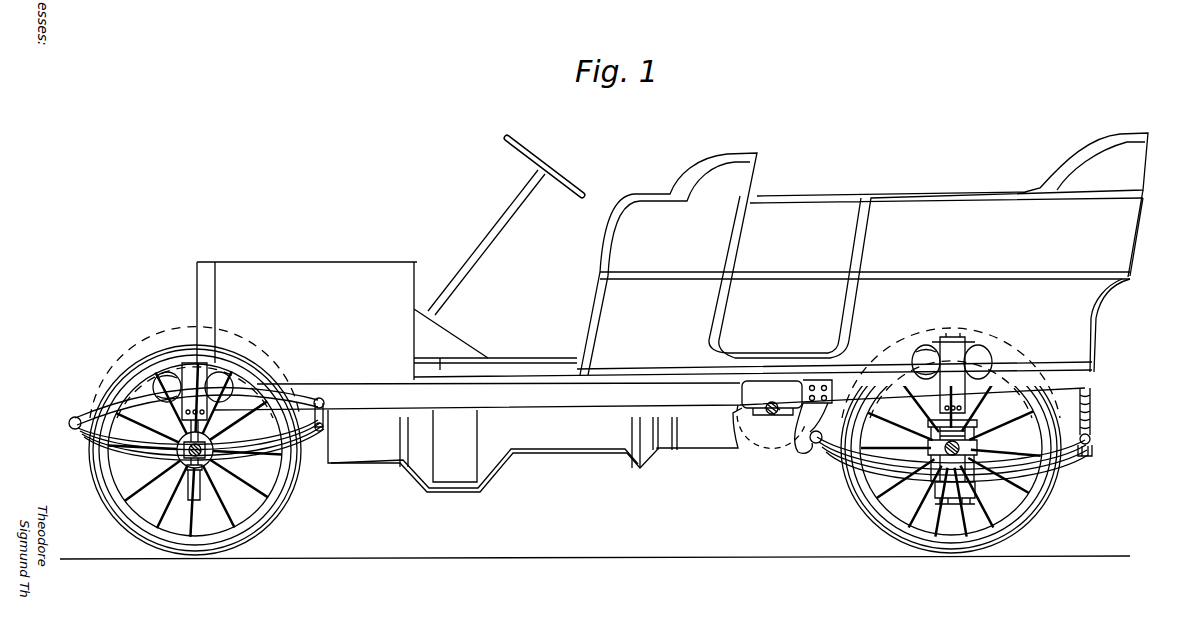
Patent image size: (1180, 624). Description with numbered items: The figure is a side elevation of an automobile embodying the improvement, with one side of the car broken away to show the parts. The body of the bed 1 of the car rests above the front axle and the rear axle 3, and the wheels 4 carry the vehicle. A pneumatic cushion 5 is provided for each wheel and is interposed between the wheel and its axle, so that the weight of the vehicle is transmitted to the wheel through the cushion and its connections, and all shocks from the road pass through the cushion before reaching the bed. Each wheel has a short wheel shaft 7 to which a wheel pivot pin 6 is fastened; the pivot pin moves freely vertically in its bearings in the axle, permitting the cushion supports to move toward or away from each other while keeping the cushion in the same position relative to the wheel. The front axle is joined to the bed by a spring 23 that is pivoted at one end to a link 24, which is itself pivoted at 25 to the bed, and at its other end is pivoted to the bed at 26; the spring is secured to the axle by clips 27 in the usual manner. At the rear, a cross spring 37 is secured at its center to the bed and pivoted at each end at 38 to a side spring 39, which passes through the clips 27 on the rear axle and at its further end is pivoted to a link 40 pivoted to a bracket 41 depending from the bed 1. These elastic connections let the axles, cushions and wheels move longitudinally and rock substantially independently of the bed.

The body of the bed of the car 1 is at (596, 395).
The rear axle 3 is at (928, 470).
The wheels 4 is at (116, 507).
The pneumatic cushion 5 is at (160, 372).
The wheel pivot pin 6 is at (965, 405).
The wheel shaft 7 is at (244, 438).
The spring 23 is at (263, 455).
The link 24 is at (333, 418).
The pivot 25 is at (322, 398).
The pivot 26 is at (74, 418).
The clips 27 is at (935, 492).
The cross spring 37 is at (1085, 425).
The pivot 38 is at (1093, 452).
The side spring 39 is at (867, 470).
The link 40 is at (817, 446).
The bracket 41 is at (807, 427).